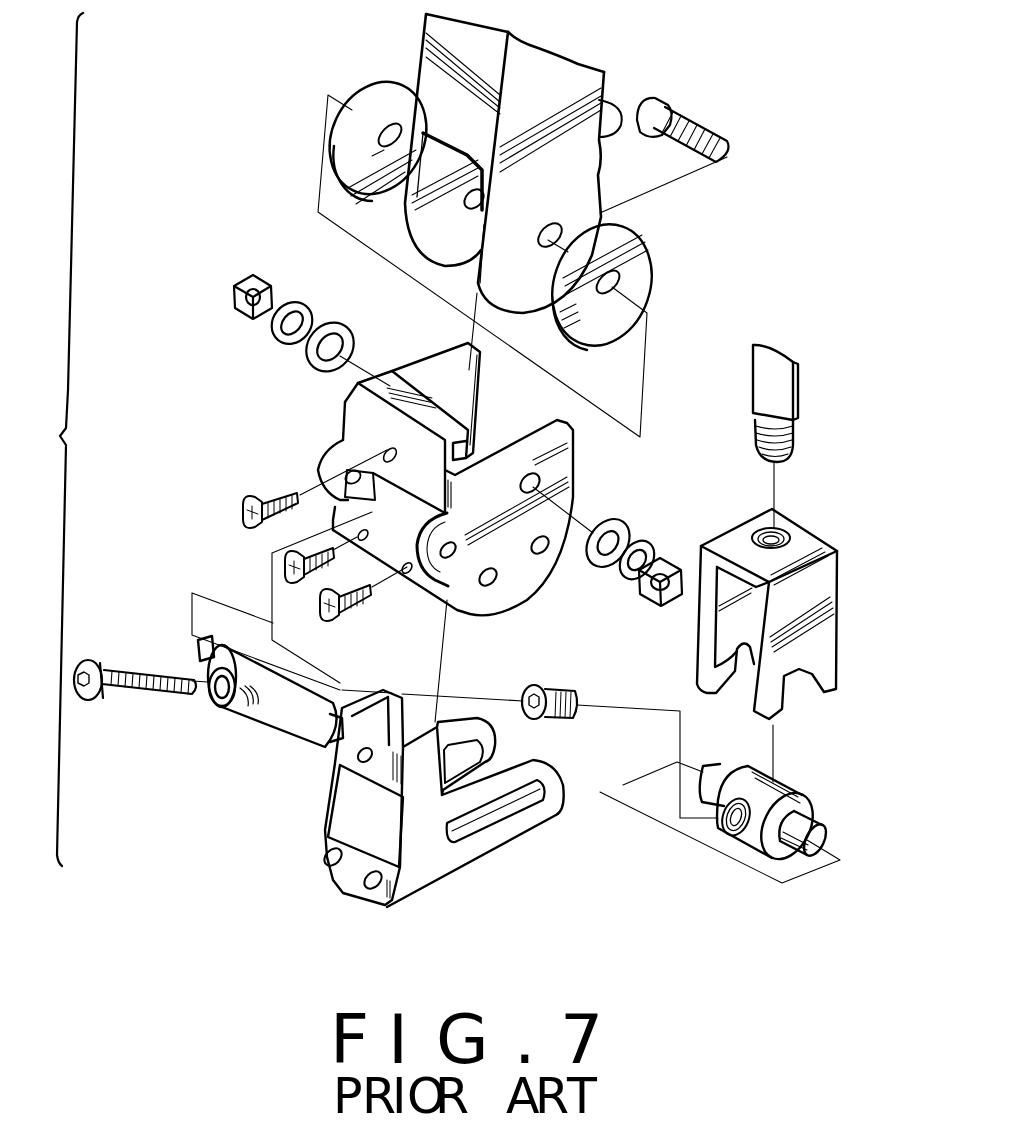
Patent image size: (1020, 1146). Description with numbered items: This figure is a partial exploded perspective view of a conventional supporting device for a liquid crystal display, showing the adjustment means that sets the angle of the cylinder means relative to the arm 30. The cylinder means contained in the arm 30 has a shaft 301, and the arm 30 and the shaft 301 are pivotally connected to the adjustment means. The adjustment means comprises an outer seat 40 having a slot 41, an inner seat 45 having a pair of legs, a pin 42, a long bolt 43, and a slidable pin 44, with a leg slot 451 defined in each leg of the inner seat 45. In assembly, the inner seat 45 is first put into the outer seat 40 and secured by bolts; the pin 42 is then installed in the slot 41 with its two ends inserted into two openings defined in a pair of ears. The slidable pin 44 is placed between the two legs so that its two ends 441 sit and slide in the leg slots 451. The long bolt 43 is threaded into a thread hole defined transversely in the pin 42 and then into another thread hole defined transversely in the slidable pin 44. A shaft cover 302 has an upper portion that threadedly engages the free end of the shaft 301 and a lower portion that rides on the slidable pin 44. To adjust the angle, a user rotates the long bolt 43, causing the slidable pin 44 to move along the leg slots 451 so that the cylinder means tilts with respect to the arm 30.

The arm 30 is at (420, 52).
The shaft 301 is at (797, 383).
The shaft cover 302 is at (828, 613).
The outer seat 40 is at (528, 587).
The slot 41 is at (382, 501).
The pin 42 is at (277, 727).
The long bolt 43 is at (143, 693).
The slidable pin 44 is at (762, 852).
The ends of slidable pin 441 is at (800, 827).
The inner seat 45 is at (437, 875).
The leg slot 451 is at (523, 810).